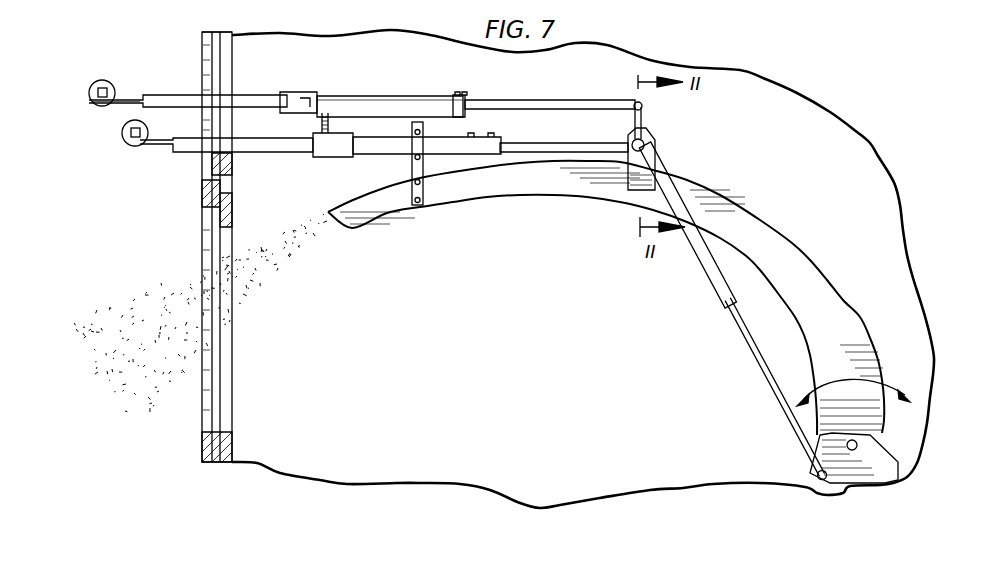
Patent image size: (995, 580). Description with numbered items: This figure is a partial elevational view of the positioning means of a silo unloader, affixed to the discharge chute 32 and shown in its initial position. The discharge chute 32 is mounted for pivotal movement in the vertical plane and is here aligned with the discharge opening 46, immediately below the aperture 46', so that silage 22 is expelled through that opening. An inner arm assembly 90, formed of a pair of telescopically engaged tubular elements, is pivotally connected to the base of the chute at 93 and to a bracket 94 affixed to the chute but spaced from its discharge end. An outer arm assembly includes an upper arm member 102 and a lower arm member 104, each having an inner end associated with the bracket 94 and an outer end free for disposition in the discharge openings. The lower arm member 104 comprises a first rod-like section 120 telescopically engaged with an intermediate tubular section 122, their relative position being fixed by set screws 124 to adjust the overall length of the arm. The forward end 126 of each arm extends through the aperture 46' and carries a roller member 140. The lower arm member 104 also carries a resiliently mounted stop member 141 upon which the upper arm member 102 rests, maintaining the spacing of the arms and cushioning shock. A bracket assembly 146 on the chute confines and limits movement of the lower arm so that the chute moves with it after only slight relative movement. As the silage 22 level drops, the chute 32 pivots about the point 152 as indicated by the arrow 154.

The silage 22 is at (140, 330).
The discharge chute 32 is at (484, 196).
The discharge opening 46 is at (252, 247).
The discharge aperture 46' is at (246, 57).
The inner arm assembly 90 is at (703, 276).
The pivotal connection 93 is at (815, 490).
The bracket 94 is at (656, 150).
The upper arm member 102 is at (388, 97).
The lower arm member 104 is at (355, 158).
The first tubular section 120 is at (563, 147).
The intermediate tubular section 122 is at (443, 140).
The set screws 124 is at (478, 130).
The forward end 126 is at (160, 93).
The roller member 140 is at (92, 84).
The stop member 141 is at (340, 100).
The bracket assembly 146 is at (412, 170).
The pivot point 152 is at (857, 452).
The arrow 154 is at (852, 378).